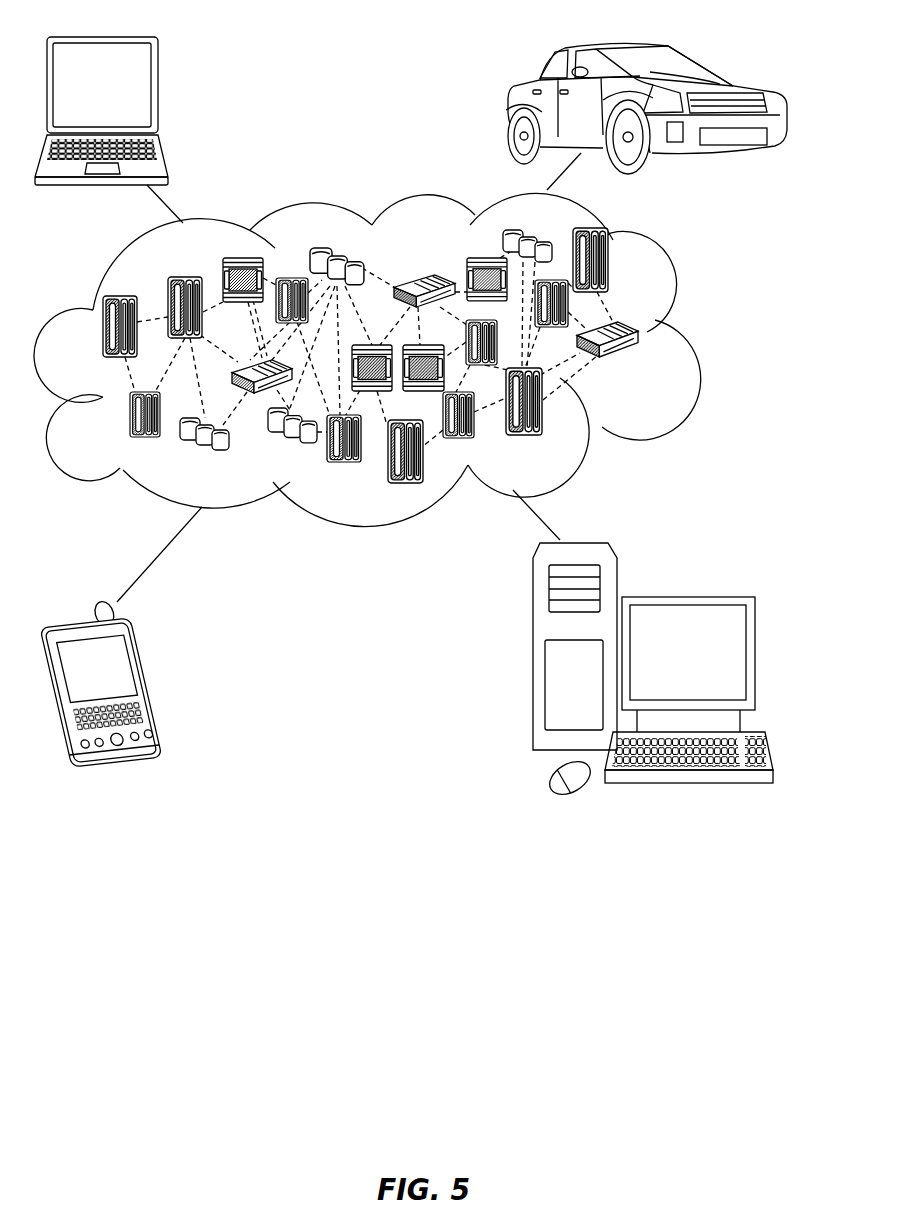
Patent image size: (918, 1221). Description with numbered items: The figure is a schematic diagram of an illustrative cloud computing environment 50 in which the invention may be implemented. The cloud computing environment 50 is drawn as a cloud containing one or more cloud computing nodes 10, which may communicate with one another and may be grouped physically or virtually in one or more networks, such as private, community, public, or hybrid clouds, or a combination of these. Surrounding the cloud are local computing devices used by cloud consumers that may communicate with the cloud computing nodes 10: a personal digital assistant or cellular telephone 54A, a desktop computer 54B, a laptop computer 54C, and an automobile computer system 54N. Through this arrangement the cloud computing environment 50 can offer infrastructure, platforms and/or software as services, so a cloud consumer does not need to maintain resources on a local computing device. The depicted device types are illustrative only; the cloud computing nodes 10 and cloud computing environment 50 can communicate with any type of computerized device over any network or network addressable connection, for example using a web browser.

The cloud computing environment 50 is at (689, 340).
The cloud computing nodes 10 is at (639, 368).
The personal digital assistant (PDA) or cellular telephone 54A is at (150, 684).
The desktop computer 54B is at (684, 596).
The laptop computer 54C is at (158, 93).
The automobile computer system 54N is at (510, 108).